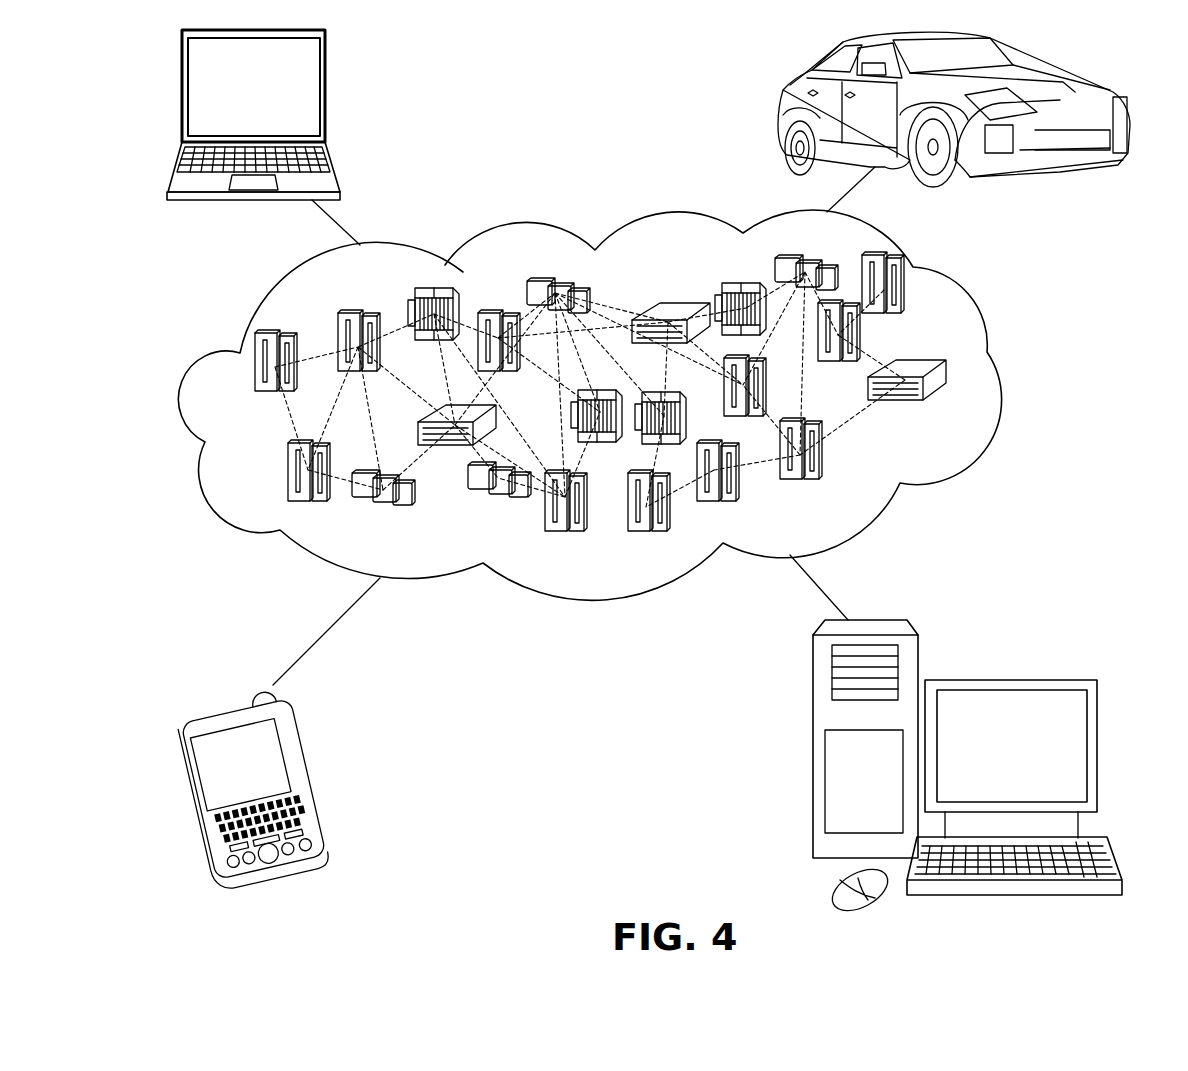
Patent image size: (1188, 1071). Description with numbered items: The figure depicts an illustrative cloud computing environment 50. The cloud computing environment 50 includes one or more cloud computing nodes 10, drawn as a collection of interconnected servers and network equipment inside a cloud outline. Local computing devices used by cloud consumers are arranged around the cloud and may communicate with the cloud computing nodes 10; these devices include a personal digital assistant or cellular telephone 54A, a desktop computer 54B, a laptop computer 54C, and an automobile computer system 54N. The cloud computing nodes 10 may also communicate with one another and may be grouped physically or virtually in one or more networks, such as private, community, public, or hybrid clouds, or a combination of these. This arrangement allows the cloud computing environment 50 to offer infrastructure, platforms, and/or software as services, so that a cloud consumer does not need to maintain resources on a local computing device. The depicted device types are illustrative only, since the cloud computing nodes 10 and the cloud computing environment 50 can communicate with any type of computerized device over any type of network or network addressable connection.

The cloud computing environment 50 is at (1012, 378).
The cloud computing nodes 10 is at (948, 410).
The laptop computer 54C is at (327, 95).
The automobile computer system 54N is at (780, 112).
The personal digital assistant (PDA) or cellular telephone 54A is at (313, 777).
The desktop computer 54B is at (1010, 680).